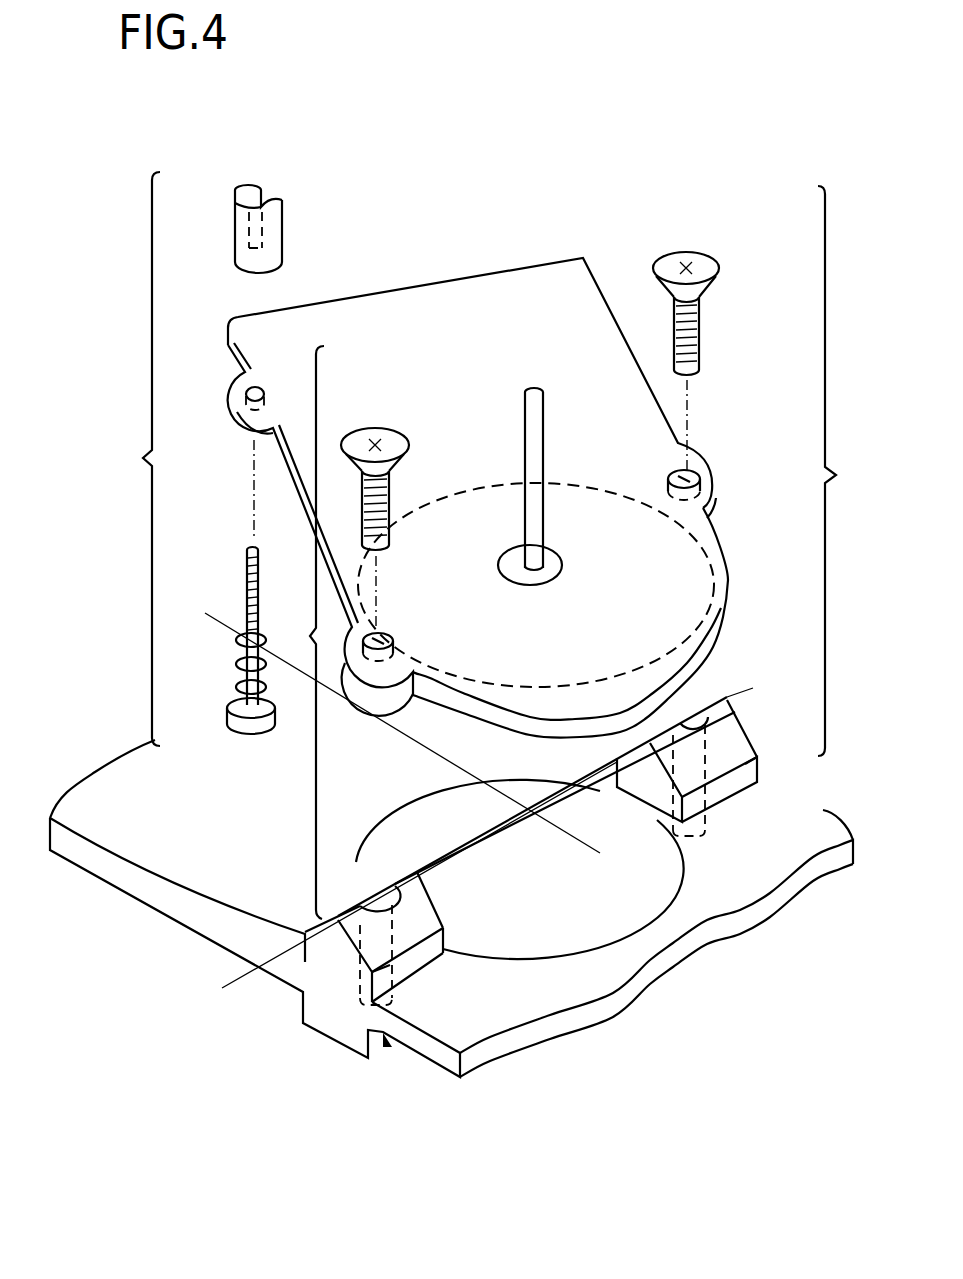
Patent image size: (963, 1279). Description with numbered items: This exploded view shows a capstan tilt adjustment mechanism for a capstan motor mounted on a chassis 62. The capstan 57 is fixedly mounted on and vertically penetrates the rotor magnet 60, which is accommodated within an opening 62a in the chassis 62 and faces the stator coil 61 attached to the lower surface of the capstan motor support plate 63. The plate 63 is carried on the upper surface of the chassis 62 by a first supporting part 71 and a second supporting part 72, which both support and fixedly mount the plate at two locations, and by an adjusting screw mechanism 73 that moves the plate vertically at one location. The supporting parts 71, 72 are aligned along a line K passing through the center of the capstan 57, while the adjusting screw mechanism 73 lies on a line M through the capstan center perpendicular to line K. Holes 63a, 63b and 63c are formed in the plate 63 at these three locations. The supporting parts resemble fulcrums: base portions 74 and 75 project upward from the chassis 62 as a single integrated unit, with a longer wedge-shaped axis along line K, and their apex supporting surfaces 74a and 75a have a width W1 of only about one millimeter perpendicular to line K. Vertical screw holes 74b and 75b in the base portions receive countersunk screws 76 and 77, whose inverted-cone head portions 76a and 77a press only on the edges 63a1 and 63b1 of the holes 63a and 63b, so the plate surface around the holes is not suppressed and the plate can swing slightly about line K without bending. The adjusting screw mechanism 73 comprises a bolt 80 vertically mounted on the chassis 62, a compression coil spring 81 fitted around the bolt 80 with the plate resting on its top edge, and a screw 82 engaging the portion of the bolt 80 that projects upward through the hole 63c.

The capstan 57 is at (546, 428).
The rotor magnet 60 is at (425, 712).
The stator coil 61 is at (520, 678).
The chassis 62 is at (182, 910).
The opening 62a is at (643, 907).
The capstan motor support plate 63 is at (509, 262).
The hole 63a is at (385, 632).
The edge of hole 63a1 is at (397, 644).
The hole 63b is at (695, 478).
The edge of hole 63b1 is at (690, 470).
The hole 63c is at (248, 396).
The first supporting part 71 is at (302, 632).
The second supporting part 72 is at (845, 471).
The adjusting screw mechanism 73 is at (130, 459).
The base portion 74 is at (428, 905).
The supporting surface 74a is at (390, 890).
The screw hole 74b is at (392, 903).
The base portion 75 is at (723, 725).
The supporting surface 75a is at (706, 716).
The screw hole 75b is at (757, 773).
The countersunk screw 76 is at (413, 489).
The head portion 76a is at (402, 442).
The countersunk screw 77 is at (727, 344).
The head portion 77a is at (712, 283).
The bolt 80 is at (244, 590).
The compression coil spring 81 is at (237, 690).
The screw 82 is at (235, 229).
The line K is at (592, 782).
The line M is at (430, 749).
The width W1 is at (432, 858).